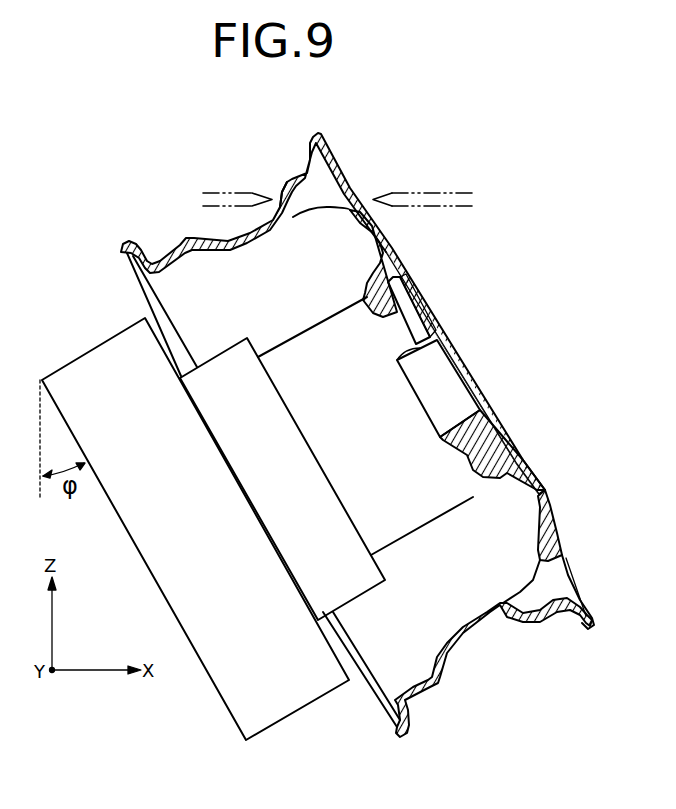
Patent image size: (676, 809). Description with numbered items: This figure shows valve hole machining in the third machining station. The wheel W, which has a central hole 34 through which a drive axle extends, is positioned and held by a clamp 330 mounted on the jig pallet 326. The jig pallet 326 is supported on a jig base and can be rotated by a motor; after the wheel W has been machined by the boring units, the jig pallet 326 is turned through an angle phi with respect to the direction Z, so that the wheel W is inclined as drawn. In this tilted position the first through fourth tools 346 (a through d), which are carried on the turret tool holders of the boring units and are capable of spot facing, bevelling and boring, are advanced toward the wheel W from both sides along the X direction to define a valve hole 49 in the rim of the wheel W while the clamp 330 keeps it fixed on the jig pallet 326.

The jig pallet 326 is at (208, 692).
The clamp 330 is at (413, 423).
The hole 34 is at (447, 337).
The valve hole 49 is at (287, 197).
The first through fourth tools 346 is at (217, 208).
The wheel W is at (547, 512).